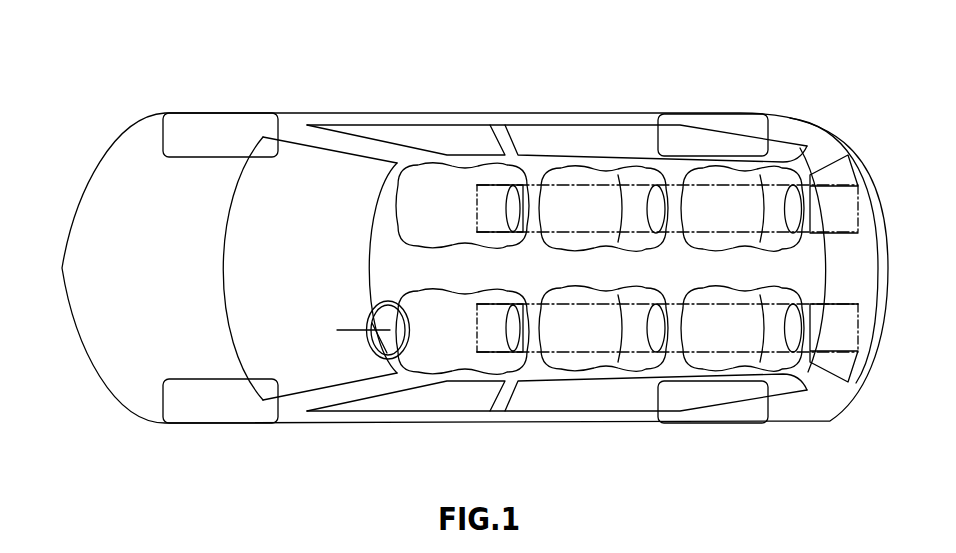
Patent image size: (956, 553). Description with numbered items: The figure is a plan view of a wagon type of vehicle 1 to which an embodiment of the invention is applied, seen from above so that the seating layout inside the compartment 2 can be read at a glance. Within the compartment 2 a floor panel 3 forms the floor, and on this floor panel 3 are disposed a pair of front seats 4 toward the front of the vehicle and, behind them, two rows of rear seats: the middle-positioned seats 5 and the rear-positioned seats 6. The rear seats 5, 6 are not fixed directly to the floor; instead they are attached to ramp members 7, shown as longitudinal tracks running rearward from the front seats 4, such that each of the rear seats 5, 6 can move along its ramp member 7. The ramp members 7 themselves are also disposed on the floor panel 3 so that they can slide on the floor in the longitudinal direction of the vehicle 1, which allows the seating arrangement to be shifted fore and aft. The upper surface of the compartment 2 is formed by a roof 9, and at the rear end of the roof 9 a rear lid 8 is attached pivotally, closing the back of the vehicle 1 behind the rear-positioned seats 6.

The vehicle 1 is at (140, 97).
The compartment 2 is at (461, 280).
The floor panel 3 is at (762, 268).
The front seats 4 is at (442, 186).
The middle-positioned seats 5 is at (583, 178).
The rear-positioned seats 6 is at (717, 177).
The ramp members 7 is at (530, 202).
The rear lid 8 is at (858, 382).
The roof 9 is at (800, 148).